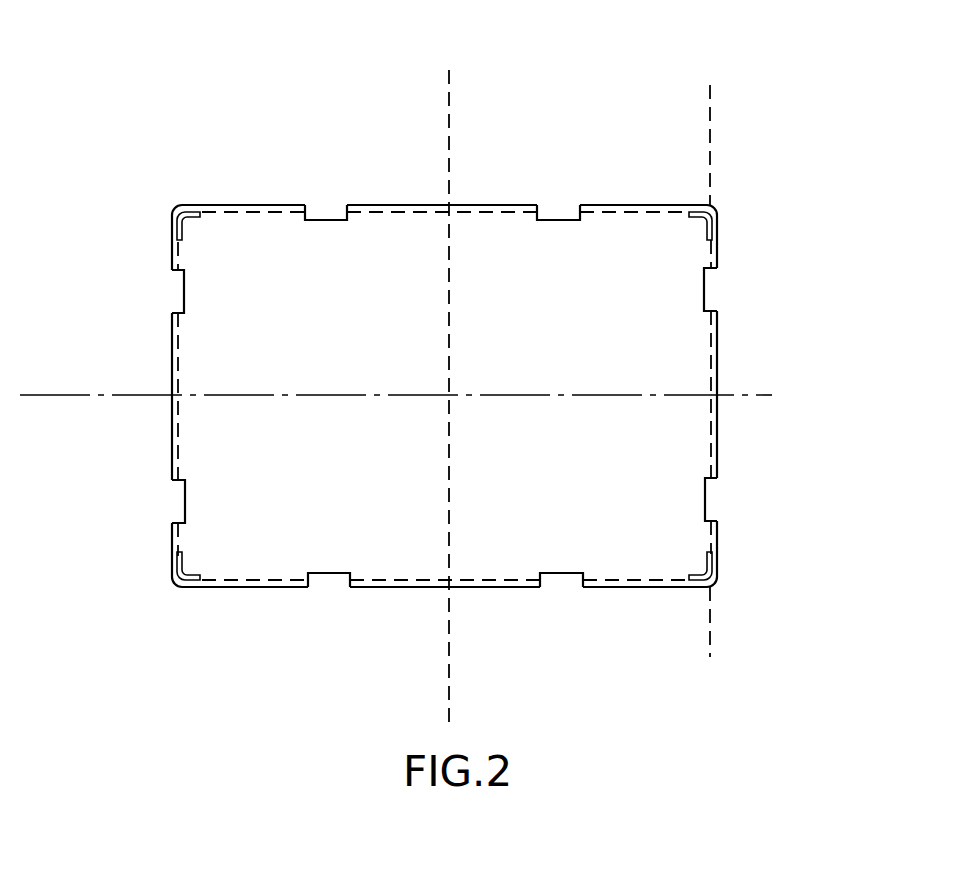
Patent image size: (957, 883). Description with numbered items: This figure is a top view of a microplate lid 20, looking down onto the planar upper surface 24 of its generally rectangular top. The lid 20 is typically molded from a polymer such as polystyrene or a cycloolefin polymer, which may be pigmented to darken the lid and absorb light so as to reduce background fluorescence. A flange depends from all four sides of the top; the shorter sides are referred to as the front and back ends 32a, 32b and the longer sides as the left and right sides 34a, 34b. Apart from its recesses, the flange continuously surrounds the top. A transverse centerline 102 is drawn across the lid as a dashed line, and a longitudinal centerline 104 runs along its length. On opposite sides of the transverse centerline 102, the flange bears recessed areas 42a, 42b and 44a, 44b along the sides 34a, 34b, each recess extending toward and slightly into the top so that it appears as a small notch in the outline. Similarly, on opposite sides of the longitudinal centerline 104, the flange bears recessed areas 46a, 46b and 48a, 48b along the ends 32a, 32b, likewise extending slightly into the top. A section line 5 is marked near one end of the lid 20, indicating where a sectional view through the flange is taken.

The section line 5 is at (705, 93).
The lid 20 is at (458, 397).
The upper surface 24 is at (608, 323).
The front end 32a is at (753, 401).
The back end 32b is at (140, 396).
The left side 34a is at (439, 612).
The right side 34b is at (444, 181).
The recessed area 42a is at (560, 588).
The recessed area 42b is at (565, 207).
The recessed area 44a is at (330, 589).
The recessed area 44b is at (330, 212).
The recessed area 46a is at (712, 505).
The recessed area 46b is at (176, 495).
The recessed area 48a is at (706, 298).
The recessed area 48b is at (176, 293).
The transverse centerline 102 is at (450, 95).
The longitudinal centerline 104 is at (748, 398).